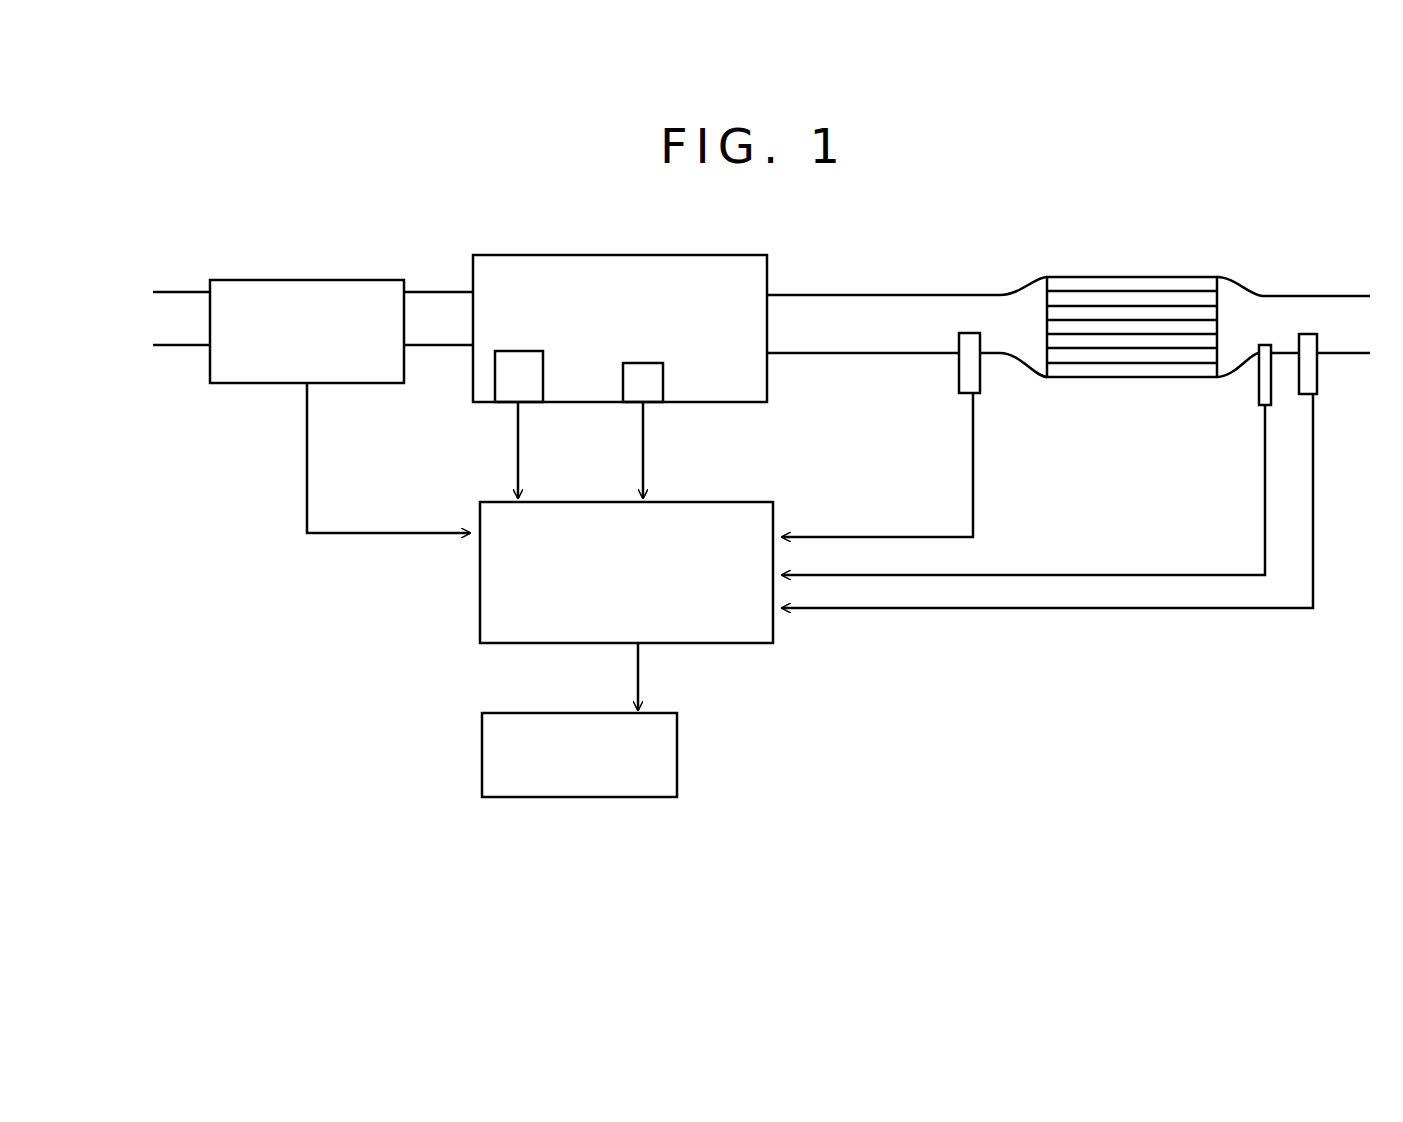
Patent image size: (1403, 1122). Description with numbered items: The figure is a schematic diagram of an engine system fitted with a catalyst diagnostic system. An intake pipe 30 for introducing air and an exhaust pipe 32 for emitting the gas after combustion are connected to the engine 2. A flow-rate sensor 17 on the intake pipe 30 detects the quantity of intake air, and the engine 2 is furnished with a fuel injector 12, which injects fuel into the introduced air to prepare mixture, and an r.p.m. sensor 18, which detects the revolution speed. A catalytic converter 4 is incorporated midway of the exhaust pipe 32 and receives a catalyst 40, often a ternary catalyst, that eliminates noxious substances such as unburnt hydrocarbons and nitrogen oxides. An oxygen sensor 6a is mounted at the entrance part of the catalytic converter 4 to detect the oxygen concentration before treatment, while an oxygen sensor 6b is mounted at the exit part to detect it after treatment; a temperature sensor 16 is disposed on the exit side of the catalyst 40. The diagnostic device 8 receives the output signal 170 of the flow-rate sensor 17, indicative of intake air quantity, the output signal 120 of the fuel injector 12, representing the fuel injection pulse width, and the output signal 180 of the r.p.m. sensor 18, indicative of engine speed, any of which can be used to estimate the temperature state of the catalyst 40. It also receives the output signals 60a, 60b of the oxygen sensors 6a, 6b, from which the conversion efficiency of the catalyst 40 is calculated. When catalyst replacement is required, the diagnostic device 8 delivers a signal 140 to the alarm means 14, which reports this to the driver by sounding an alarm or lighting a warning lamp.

The intake pipe 30 is at (178, 288).
The flow-rate sensor 17 is at (294, 280).
The engine 2 is at (768, 283).
The fuel injector 12 is at (508, 366).
The r.p.m. sensor 18 is at (646, 400).
The exhaust pipe 32 is at (888, 300).
The catalytic converter 4 is at (1198, 275).
The catalyst 40 is at (1142, 375).
The oxygen sensor 6a is at (985, 385).
The temperature sensor 16 is at (1257, 367).
The oxygen sensor 6b is at (1318, 388).
The output signal 170 is at (304, 430).
The output signal 120 is at (515, 437).
The output signal 180 is at (640, 430).
The output signal 60a is at (975, 528).
The output signal 60b is at (1148, 610).
The diagnostic device 8 is at (490, 572).
The signal 140 is at (640, 670).
The alarm means 14 is at (680, 740).